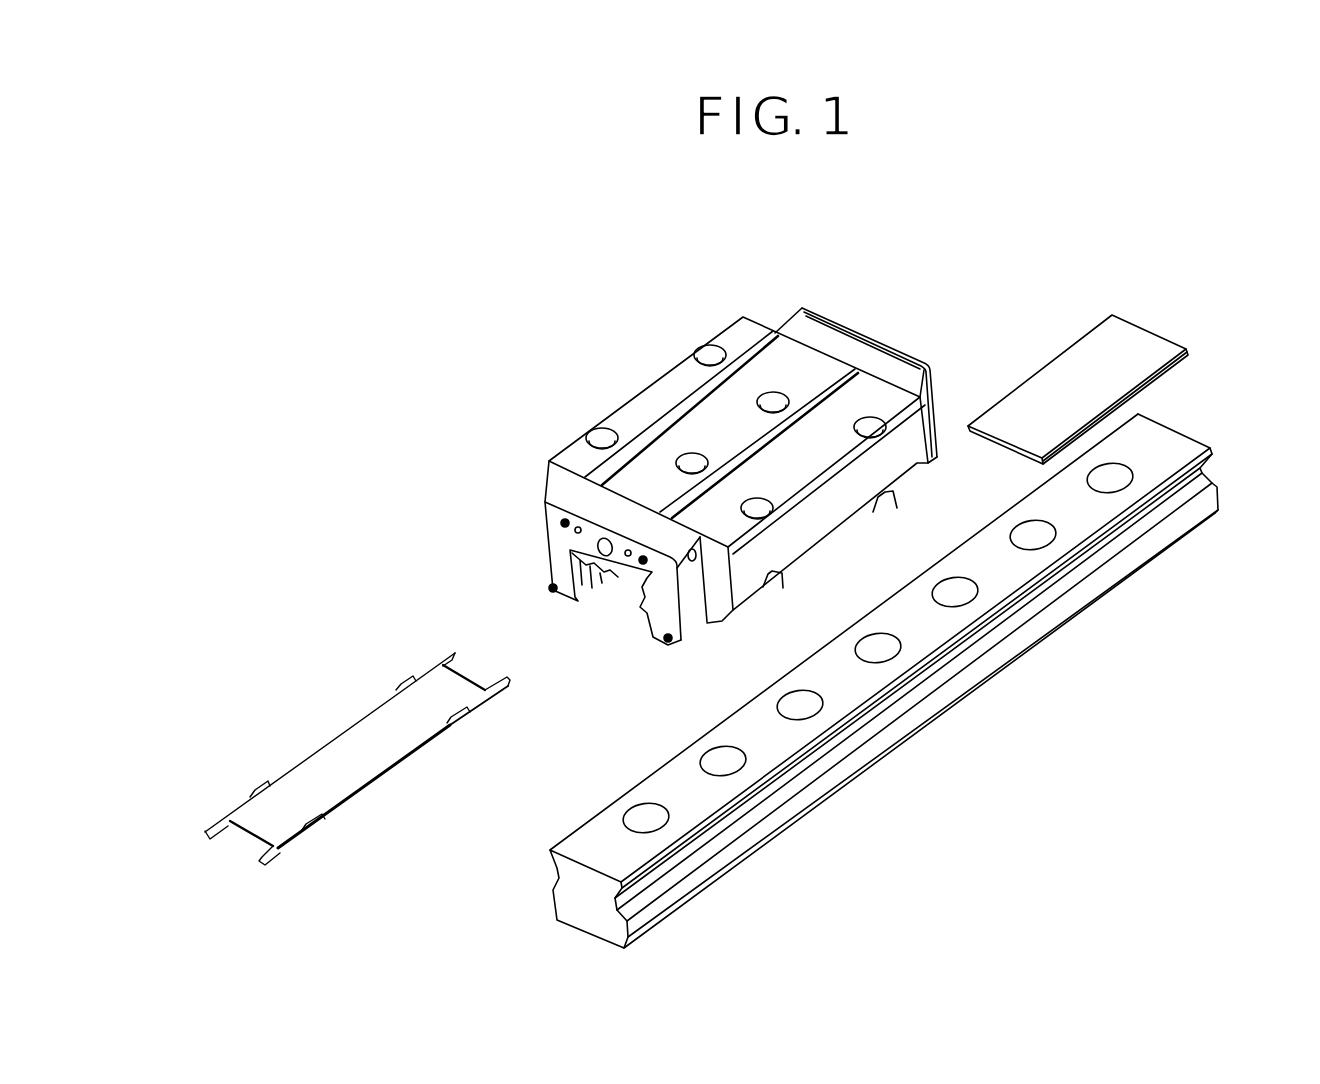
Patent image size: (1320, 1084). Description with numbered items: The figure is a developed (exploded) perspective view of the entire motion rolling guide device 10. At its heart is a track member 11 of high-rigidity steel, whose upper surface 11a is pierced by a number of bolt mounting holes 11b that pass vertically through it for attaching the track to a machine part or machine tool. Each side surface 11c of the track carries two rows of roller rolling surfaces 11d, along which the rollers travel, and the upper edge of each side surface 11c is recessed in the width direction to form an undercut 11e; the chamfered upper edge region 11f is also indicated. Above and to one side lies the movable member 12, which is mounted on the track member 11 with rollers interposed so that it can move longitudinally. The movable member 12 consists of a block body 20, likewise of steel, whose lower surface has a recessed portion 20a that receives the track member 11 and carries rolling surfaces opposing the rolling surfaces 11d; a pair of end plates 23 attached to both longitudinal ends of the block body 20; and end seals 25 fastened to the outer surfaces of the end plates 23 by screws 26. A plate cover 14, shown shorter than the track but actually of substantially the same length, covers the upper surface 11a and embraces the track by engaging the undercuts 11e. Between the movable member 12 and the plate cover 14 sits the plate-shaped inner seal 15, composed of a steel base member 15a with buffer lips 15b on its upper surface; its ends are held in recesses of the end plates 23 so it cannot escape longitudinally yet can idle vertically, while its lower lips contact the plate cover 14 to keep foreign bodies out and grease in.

The motion rolling guide device 10 is at (1052, 259).
The track member 11 is at (1214, 431).
The upper surface of the track member 11a is at (1005, 576).
The bolt mounting holes 11b is at (882, 630).
The side surfaces of the track member 11c is at (945, 701).
The rolling surfaces of the track member 11d is at (554, 891).
The undercuts 11e is at (742, 802).
The upper edge / chamfer of rail 11f is at (628, 790).
The movable member 12 is at (673, 359).
The plate cover 14 is at (1167, 339).
The inner seal 15 is at (327, 750).
The base member 15a is at (363, 770).
The lips for buffer function 15b is at (450, 710).
The block body 20 is at (623, 415).
The recessed portion 20a is at (608, 580).
The end plates 23 is at (836, 347).
The end seals 25 is at (862, 333).
The screws 26 is at (552, 588).